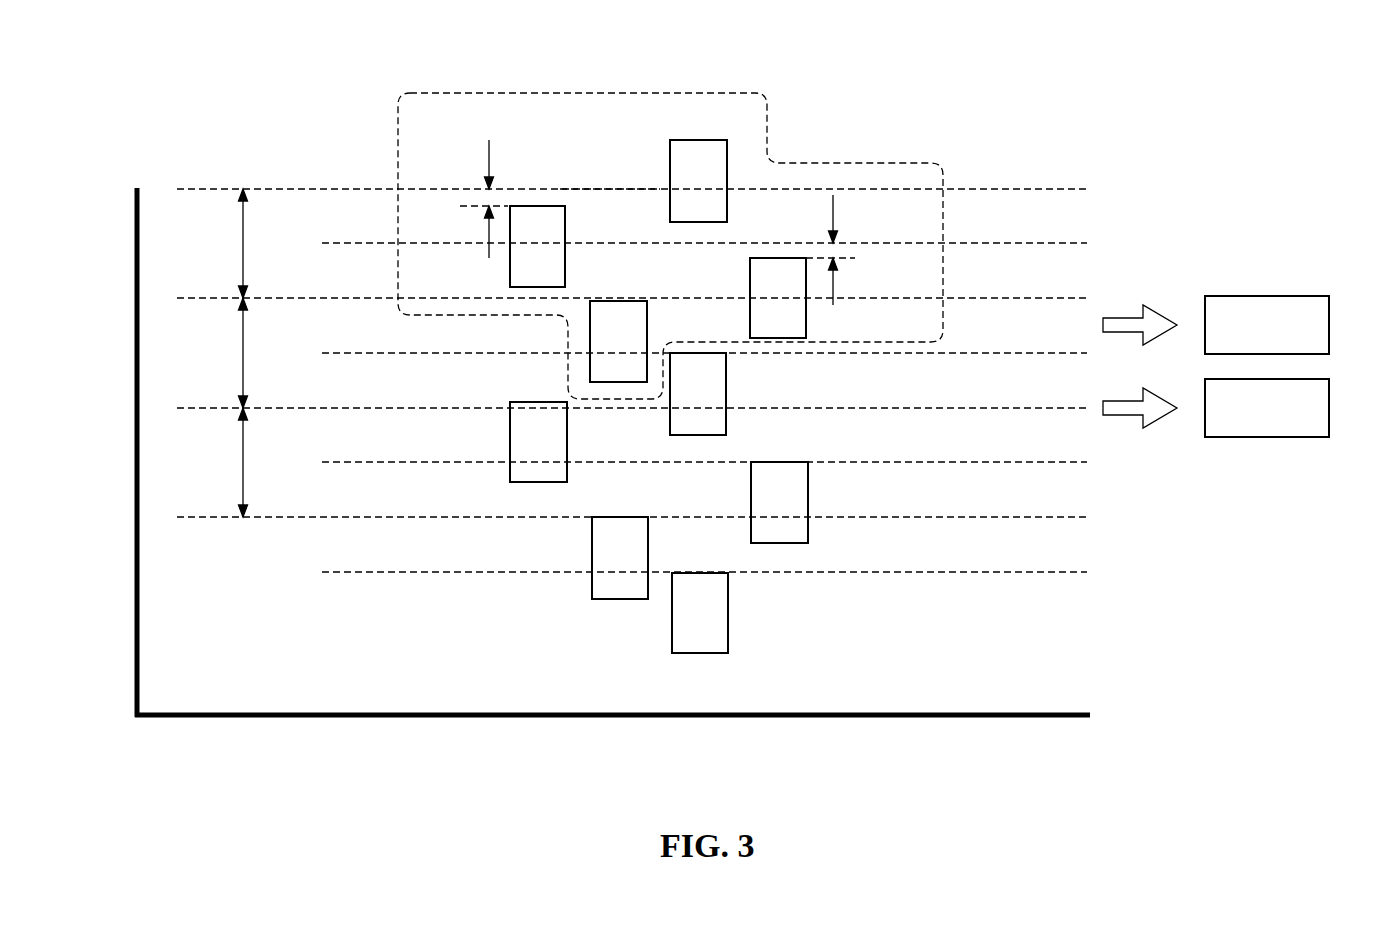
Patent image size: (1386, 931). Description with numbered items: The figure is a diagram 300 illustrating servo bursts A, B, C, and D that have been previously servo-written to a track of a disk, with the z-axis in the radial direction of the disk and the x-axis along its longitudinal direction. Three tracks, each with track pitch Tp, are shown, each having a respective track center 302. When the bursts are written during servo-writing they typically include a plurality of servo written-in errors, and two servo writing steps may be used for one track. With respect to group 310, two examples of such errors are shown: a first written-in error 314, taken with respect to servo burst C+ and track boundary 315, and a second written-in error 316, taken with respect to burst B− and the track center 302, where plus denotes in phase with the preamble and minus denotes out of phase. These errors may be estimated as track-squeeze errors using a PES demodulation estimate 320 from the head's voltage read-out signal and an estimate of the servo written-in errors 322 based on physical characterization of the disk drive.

The diagram 300 is at (326, 75).
The track center 302 is at (980, 243).
The group 310 is at (693, 93).
The d[0] 314 is at (489, 153).
The track boundary 315 is at (575, 189).
The d[1] 316 is at (833, 215).
The PES demodulation estimate Fz(v) 320 is at (1268, 296).
The estimate of servo written-in errors Fp(v) 322 is at (1268, 437).